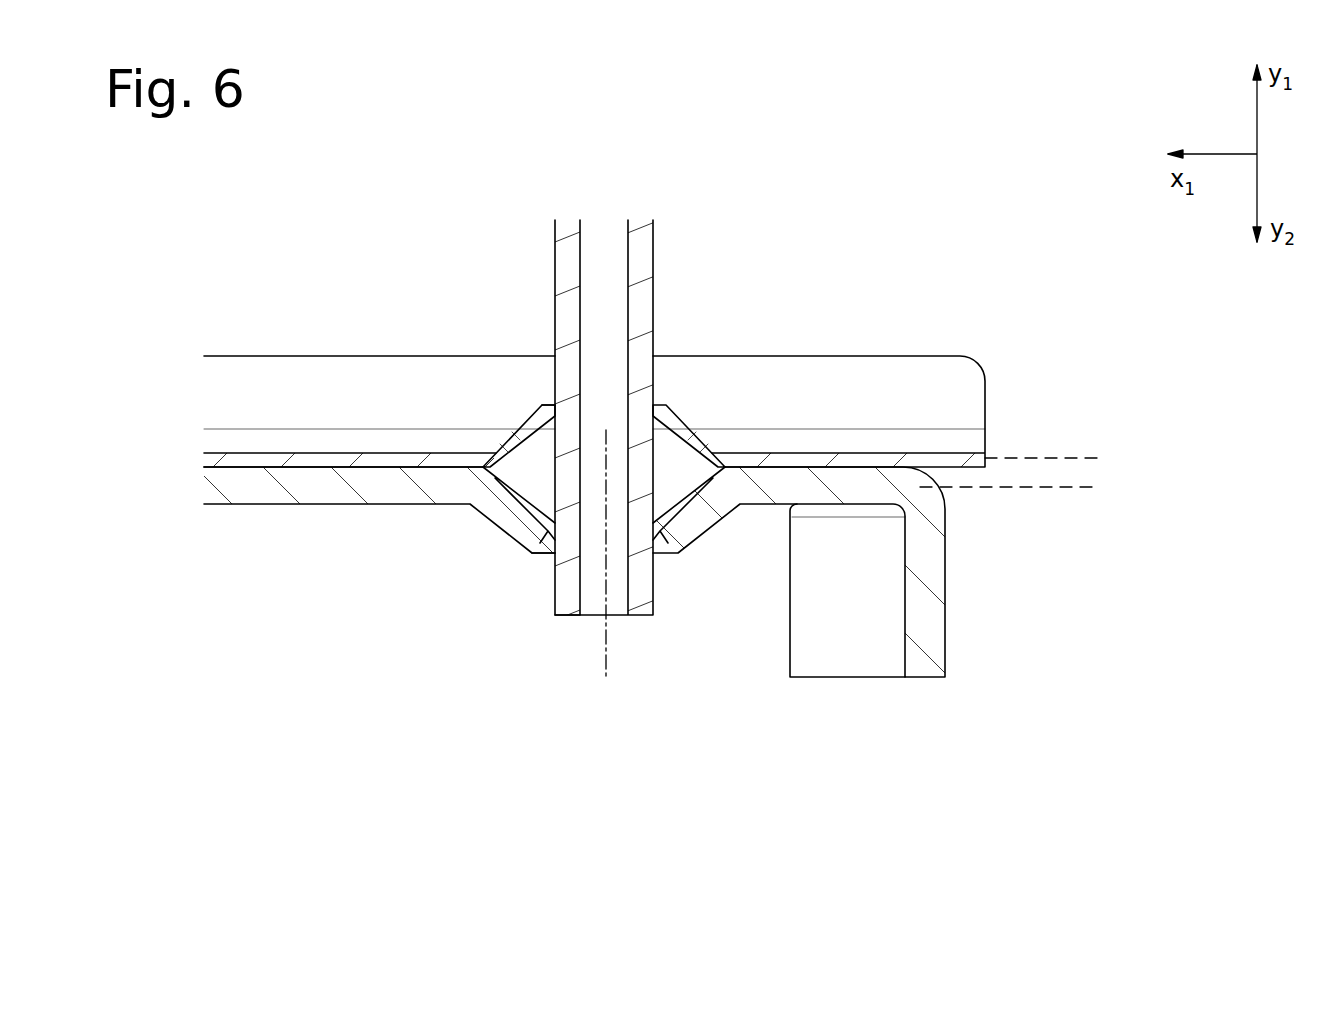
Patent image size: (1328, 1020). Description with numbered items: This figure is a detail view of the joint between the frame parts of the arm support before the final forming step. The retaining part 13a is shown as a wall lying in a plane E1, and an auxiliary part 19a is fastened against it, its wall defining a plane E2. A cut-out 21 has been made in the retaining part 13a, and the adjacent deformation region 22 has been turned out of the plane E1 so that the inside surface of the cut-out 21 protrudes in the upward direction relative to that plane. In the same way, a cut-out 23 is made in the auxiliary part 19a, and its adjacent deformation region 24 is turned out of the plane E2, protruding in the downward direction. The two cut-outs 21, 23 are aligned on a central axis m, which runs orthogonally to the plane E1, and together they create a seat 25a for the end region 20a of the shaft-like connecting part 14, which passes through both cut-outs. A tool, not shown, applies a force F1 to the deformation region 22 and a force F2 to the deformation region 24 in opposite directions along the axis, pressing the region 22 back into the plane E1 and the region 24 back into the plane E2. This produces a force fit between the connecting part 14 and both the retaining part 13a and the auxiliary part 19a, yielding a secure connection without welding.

The retaining part 13a is at (257, 395).
The connecting part 14 is at (572, 270).
The auxiliary part 19a is at (350, 493).
The end region 20a is at (570, 633).
The cut-out 21 is at (546, 401).
The deformation region 22 is at (513, 430).
The cut-out 23 is at (550, 558).
The deformation region 24 is at (512, 520).
The seat 25a is at (670, 444).
The central axis m is at (607, 662).
The plane E1 is at (1060, 457).
The plane E2 is at (1058, 488).
The force F1 is at (698, 590).
The force F2 is at (686, 250).